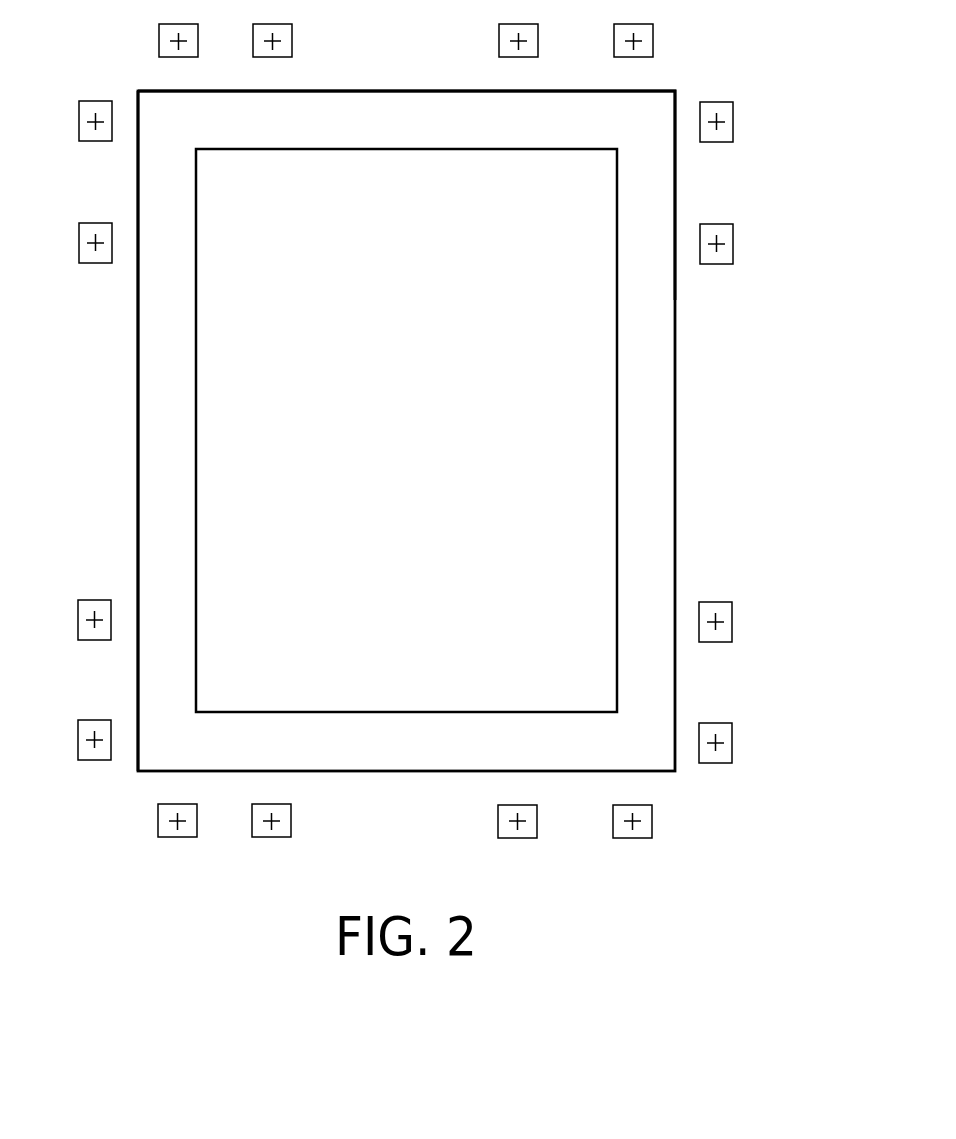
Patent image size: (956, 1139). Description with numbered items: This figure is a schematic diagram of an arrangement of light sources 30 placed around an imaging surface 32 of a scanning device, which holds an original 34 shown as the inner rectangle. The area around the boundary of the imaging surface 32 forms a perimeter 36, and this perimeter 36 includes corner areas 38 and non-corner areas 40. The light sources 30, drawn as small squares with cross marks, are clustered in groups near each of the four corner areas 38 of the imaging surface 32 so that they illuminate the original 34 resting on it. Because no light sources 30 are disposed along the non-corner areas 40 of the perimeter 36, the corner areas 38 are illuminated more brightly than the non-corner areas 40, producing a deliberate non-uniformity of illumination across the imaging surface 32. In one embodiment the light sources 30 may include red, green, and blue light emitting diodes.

The light sources 30 is at (733, 243).
The imaging surface 32 is at (675, 312).
The original 34 is at (196, 407).
The perimeter 36 is at (138, 320).
The corner areas 38 is at (675, 91).
The non-corner areas 40 is at (138, 482).